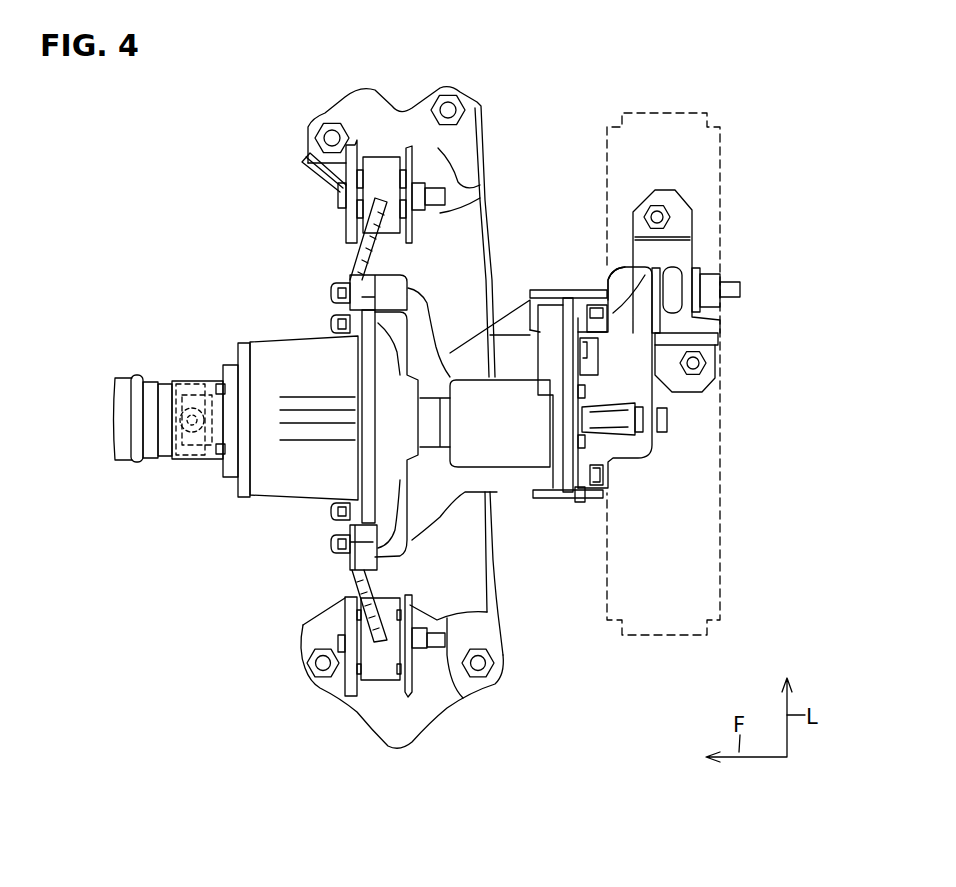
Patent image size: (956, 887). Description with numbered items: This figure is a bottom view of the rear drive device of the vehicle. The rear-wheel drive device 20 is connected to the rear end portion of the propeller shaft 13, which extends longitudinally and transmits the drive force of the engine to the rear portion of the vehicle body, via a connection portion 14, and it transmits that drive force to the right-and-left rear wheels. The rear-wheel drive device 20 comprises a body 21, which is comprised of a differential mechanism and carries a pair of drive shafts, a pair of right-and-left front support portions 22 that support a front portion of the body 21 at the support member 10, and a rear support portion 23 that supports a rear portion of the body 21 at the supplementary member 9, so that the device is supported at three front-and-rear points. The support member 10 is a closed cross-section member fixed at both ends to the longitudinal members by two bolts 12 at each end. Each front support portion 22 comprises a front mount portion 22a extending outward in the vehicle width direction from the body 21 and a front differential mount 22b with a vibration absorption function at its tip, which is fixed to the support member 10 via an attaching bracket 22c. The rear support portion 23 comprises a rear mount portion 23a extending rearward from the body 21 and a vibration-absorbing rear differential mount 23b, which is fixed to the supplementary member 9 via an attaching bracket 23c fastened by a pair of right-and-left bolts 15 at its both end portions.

The supplementary member 9 is at (722, 580).
The support member 10 is at (303, 627).
The bolts 12 is at (321, 668).
The propeller shaft 13 is at (120, 380).
The connection portion 14 is at (190, 455).
The bolts 15 is at (660, 210).
The rear-wheel drive device 20 is at (555, 518).
The body 21 is at (660, 359).
The front support portion 22 is at (346, 377).
The front mount portion 22a is at (353, 260).
The front differential mount 22b is at (375, 165).
The attaching bracket 22c is at (303, 157).
The rear support portion 23 is at (710, 277).
The rear mount portion 23a is at (627, 273).
The rear differential mount 23b is at (700, 267).
The attaching bracket 23c is at (710, 345).